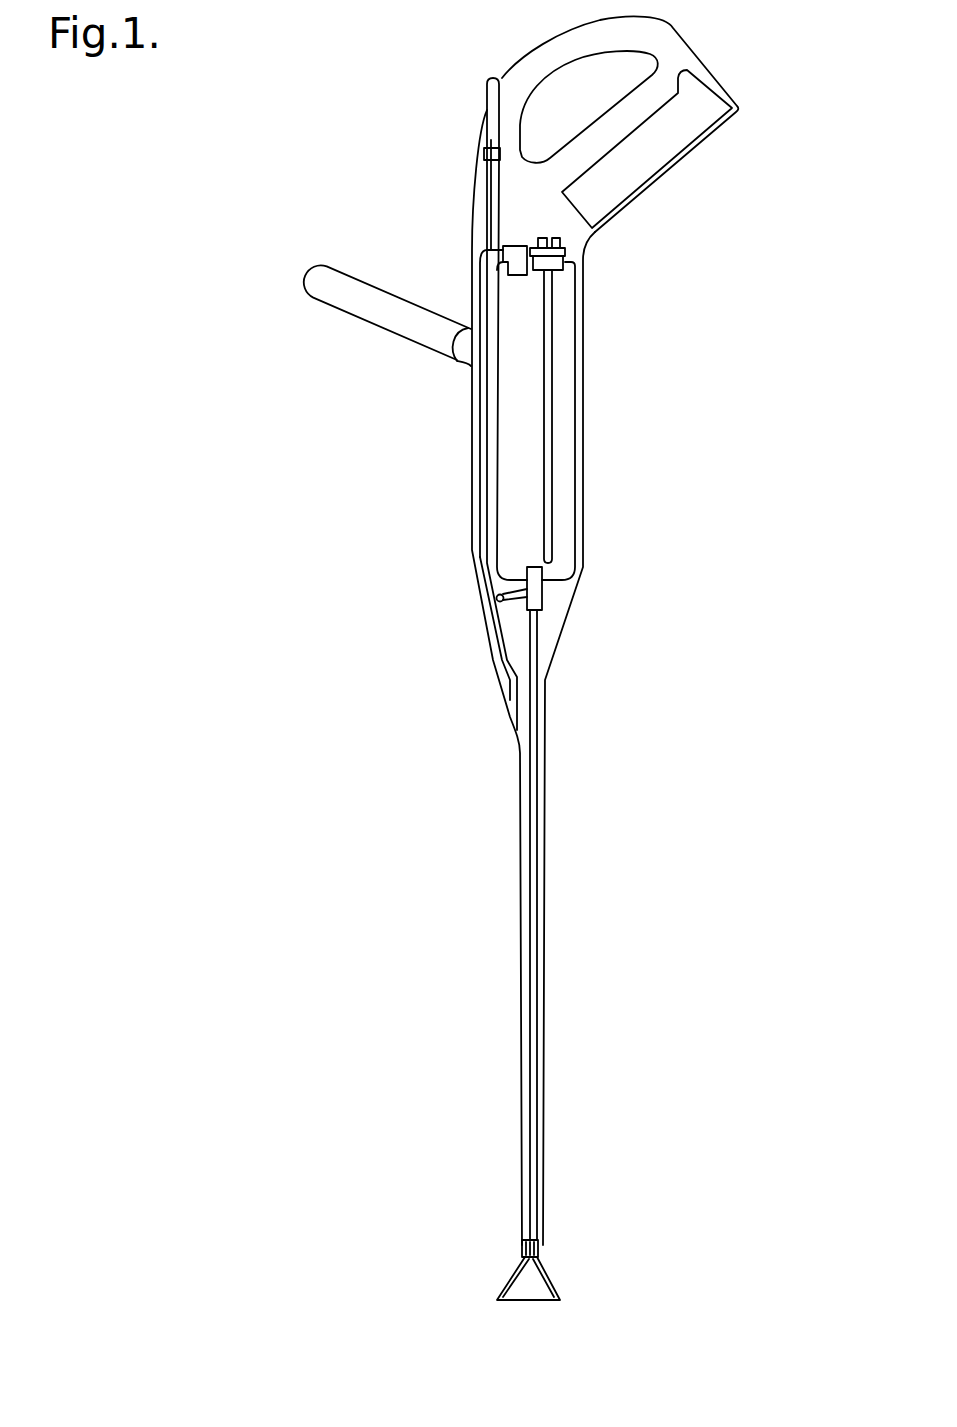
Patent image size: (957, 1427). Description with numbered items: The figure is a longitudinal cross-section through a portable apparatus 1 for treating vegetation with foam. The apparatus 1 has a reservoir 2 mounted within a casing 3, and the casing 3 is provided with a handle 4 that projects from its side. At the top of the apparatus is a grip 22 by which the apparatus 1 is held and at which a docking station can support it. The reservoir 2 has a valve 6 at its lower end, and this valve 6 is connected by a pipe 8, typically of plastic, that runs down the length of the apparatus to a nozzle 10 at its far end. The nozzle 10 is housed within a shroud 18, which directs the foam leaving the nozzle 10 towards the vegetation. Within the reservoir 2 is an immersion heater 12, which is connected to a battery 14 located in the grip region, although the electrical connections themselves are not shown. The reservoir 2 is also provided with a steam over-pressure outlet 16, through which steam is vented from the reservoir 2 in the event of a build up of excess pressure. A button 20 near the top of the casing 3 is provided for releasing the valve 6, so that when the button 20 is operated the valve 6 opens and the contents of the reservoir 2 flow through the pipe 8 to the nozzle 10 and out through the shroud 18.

The apparatus 1 is at (422, 178).
The reservoir 2 is at (560, 542).
The casing 3 is at (470, 268).
The handle 4 is at (387, 323).
The valve 6 is at (537, 600).
The pipe 8 is at (533, 927).
The nozzle 10 is at (530, 1252).
The immersion heater 12 is at (552, 417).
The battery 14 is at (647, 172).
The steam over-pressure outlet 16 is at (508, 717).
The shroud 18 is at (557, 1287).
The button 20 is at (490, 80).
The grip 22 is at (567, 48).